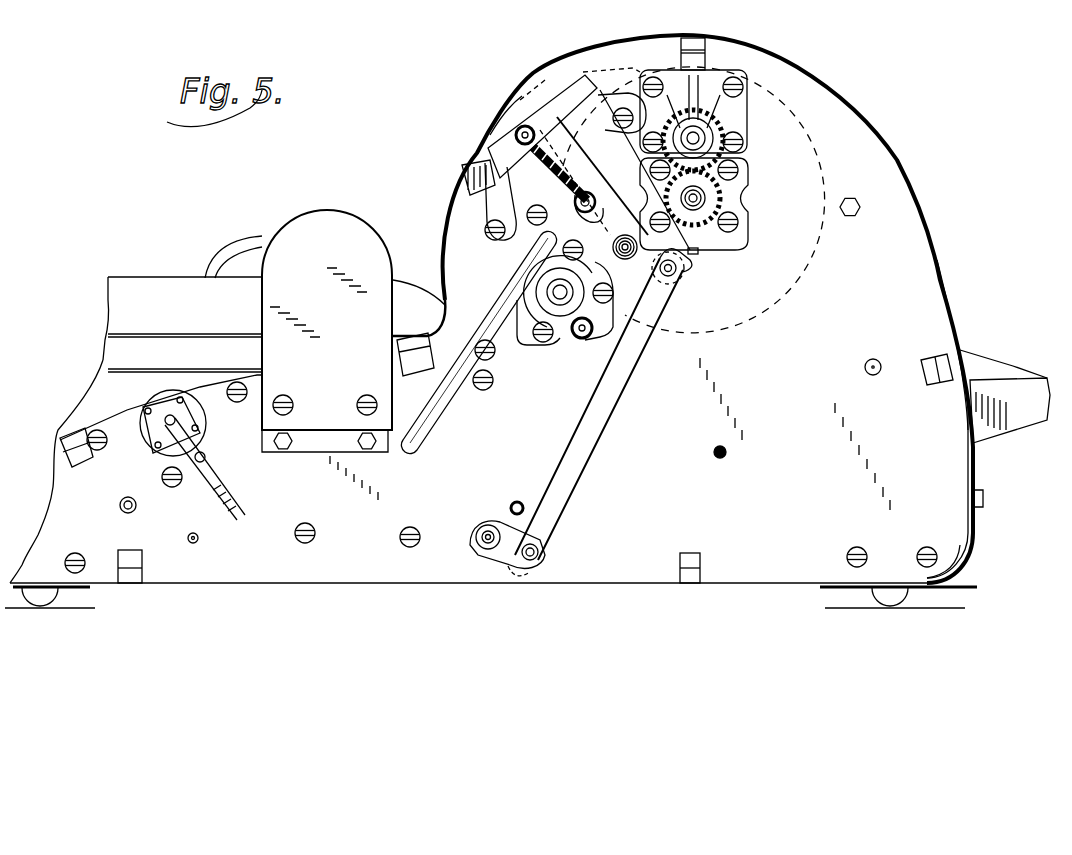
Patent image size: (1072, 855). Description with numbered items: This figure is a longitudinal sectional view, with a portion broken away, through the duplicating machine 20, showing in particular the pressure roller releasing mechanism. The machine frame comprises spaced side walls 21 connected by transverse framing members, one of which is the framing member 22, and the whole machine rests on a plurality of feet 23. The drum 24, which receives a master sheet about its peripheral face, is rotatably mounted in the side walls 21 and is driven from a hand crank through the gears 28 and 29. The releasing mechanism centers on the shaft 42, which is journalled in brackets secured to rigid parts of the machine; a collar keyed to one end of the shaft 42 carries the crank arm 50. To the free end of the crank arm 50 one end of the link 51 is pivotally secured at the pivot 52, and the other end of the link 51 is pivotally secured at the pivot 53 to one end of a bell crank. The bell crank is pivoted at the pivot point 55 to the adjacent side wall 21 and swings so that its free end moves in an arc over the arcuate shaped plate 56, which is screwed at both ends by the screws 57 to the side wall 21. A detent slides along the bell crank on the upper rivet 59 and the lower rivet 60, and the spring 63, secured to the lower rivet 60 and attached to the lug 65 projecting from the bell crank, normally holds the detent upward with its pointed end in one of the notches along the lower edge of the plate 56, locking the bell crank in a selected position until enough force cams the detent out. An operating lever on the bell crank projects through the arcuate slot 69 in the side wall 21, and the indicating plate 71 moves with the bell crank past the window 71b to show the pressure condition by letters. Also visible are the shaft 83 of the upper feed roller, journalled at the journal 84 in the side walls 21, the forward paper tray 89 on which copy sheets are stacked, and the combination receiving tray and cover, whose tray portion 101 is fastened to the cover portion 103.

The duplicating machine 20 is at (868, 120).
The side walls 21 is at (898, 250).
The transverse framing member 22 is at (967, 561).
The feet 23 is at (42, 598).
The drum 24 is at (783, 97).
The gear 28 is at (720, 155).
The gear 29 is at (715, 200).
The shaft 42 is at (477, 528).
The crank arm 50 is at (500, 553).
The link 51 is at (597, 427).
The pivot 52 is at (540, 553).
The pivot 53 is at (688, 262).
The pivot point 55 is at (625, 252).
The arcuate shaped plate 56 is at (500, 187).
The screws 57 is at (485, 229).
The upper rivet 59 is at (618, 125).
The lower rivet 60 is at (517, 223).
The spring 63 is at (530, 226).
The lug 65 is at (518, 134).
The arcuate slot 69 is at (470, 172).
The indicating plate 71 is at (484, 152).
The window 71b is at (517, 100).
The shaft 83 is at (560, 296).
The journal 84 is at (547, 308).
The paper tray 89 is at (197, 320).
The tray portion 101 is at (980, 350).
The cover portion 103 is at (998, 446).